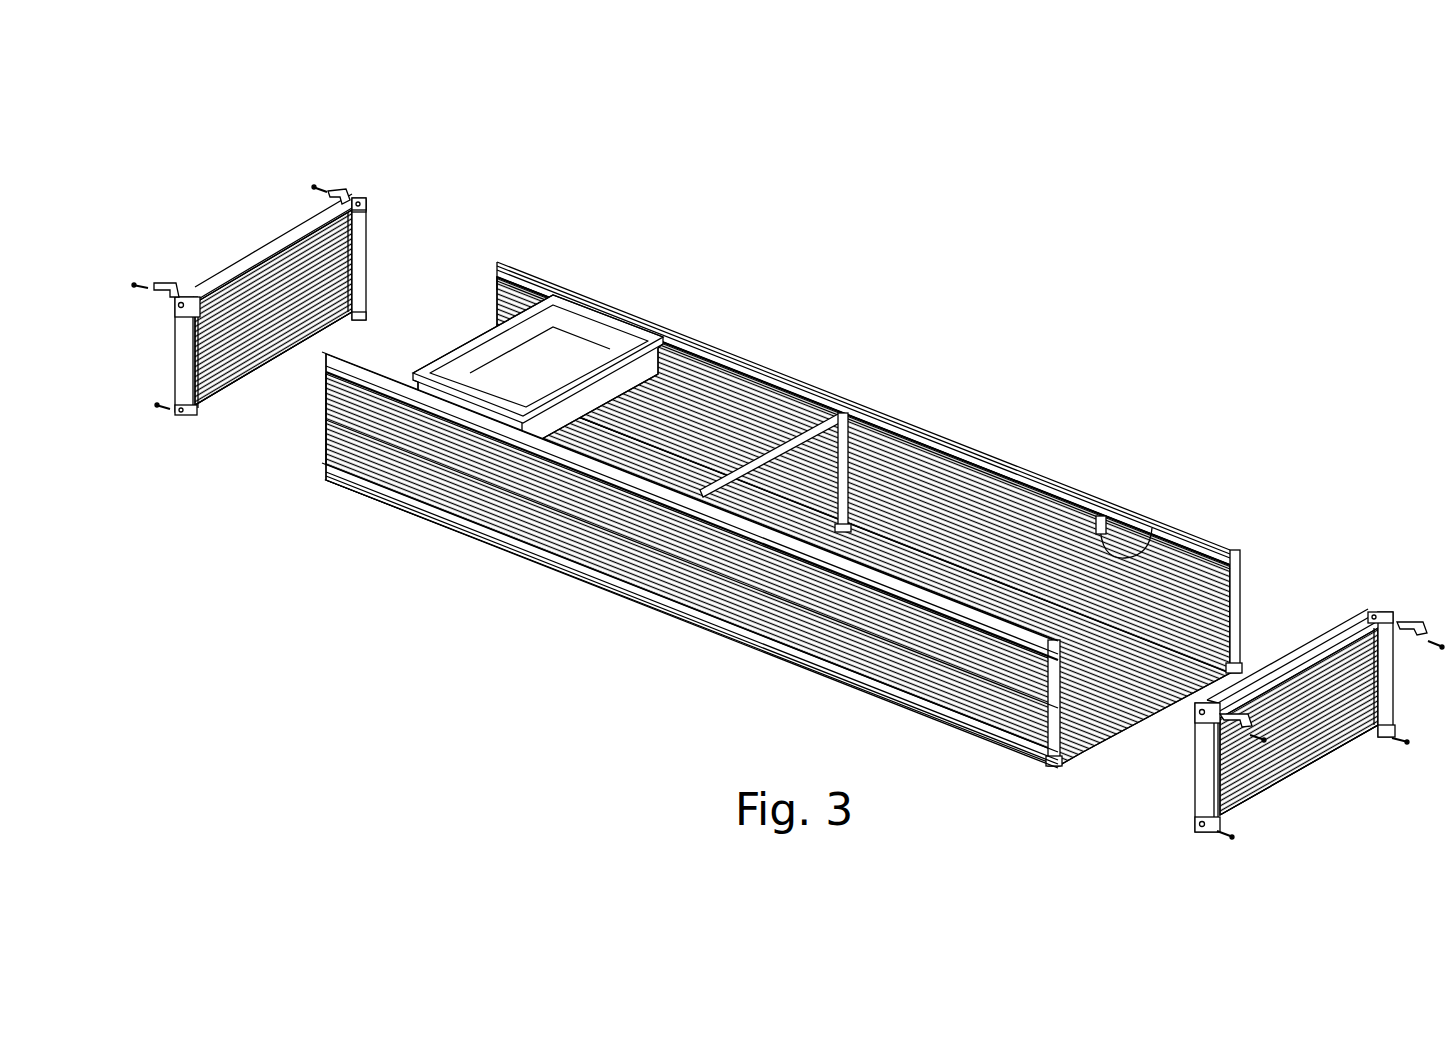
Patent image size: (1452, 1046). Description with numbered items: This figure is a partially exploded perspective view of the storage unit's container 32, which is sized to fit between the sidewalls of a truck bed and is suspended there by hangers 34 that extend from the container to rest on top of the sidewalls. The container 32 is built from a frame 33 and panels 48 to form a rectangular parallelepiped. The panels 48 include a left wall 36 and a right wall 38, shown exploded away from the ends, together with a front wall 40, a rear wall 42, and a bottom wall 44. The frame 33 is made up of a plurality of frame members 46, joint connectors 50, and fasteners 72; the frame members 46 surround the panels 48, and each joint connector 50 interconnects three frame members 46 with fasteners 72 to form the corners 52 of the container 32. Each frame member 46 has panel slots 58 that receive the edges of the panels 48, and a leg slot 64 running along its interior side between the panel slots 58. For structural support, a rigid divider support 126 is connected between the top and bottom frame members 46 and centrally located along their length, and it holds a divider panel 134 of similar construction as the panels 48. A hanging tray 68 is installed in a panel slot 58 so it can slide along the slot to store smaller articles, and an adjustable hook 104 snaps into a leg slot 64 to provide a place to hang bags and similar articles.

The container 32 is at (930, 393).
The frame 33 is at (425, 520).
The hangers 34 is at (343, 186).
The left wall 36 is at (304, 290).
The right wall 38 is at (1278, 755).
The front wall 40 is at (943, 500).
The rear wall 42 is at (545, 533).
The bottom wall 44 is at (1203, 660).
The frame member 46 is at (593, 292).
The panels 48 is at (740, 413).
The joint connector 50 is at (186, 298).
The corners 52 is at (357, 202).
The panel slot 58 is at (677, 343).
The leg slot 64 is at (693, 358).
The hanging tray 68 is at (518, 350).
The fasteners 72 is at (136, 285).
The adjustable hook 104 is at (1148, 657).
The divider support 126 is at (842, 412).
The divider panel 134 is at (815, 458).